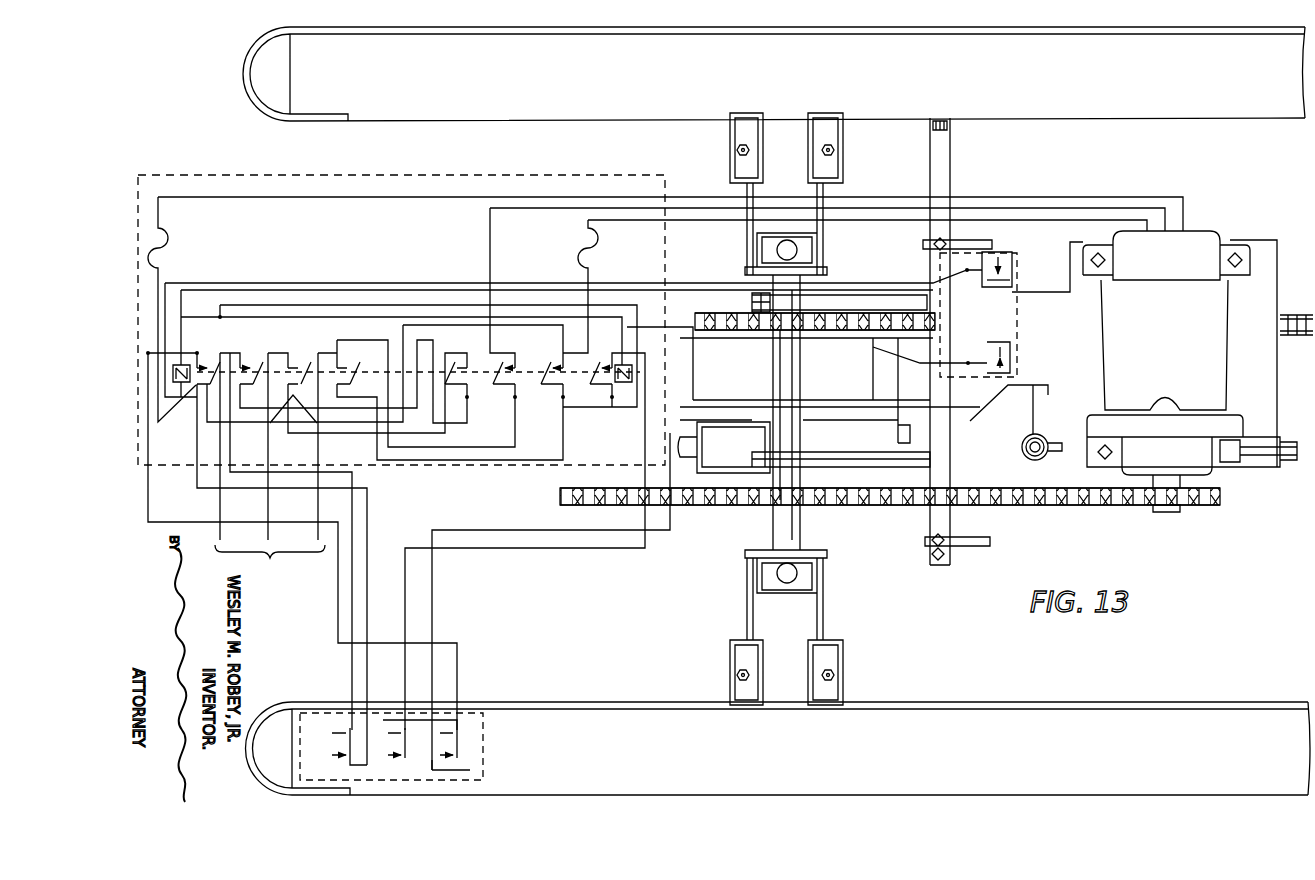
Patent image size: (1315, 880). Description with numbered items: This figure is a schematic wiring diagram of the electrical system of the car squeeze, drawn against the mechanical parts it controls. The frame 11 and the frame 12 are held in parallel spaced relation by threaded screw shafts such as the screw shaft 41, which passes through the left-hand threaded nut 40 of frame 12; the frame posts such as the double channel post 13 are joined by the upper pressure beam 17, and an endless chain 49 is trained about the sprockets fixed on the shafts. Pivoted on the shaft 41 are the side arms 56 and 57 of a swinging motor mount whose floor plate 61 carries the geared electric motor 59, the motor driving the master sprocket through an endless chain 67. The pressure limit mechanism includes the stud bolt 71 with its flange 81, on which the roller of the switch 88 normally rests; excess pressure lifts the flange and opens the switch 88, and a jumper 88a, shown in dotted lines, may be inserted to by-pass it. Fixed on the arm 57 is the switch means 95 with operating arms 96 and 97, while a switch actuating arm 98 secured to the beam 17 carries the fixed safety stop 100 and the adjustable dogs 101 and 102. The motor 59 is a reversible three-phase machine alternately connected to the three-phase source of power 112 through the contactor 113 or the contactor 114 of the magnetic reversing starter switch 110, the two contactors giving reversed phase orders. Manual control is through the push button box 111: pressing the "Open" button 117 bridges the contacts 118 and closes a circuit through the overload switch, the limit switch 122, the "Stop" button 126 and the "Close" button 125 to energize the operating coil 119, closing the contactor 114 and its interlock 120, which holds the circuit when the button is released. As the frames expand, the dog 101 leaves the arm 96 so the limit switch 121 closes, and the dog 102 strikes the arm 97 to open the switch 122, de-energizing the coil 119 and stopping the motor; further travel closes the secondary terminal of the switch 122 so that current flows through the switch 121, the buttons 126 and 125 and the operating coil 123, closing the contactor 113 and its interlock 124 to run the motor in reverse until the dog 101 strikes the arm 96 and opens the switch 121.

The frame 11 is at (1130, 735).
The frame 12 is at (446, 98).
The double channel post 13 is at (739, 131).
The upper channel iron pressure beam 17 is at (1175, 86).
The nut 40 is at (757, 250).
The screw shaft 41 is at (779, 521).
The endless chain 49 is at (862, 331).
The side arm 56 is at (843, 464).
The side arm 57 is at (752, 302).
The geared electric motor 59 is at (1178, 335).
The floor plate 61 is at (1265, 385).
The endless chain 67 is at (1128, 504).
The stud bolt 71 is at (1050, 452).
The flange 81 is at (1040, 462).
The switch 88 is at (1042, 398).
The jumper 88a is at (830, 390).
The switch means 95 is at (1020, 346).
The operating arm 96 is at (1000, 262).
The operating arm 97 is at (1006, 416).
The switch actuating arm 98 is at (950, 148).
The fixed safety stop 100 is at (934, 556).
The adjustable switch actuating dog 101 is at (966, 244).
The adjustable switch actuating dog 102 is at (992, 543).
The magnetic reversing starter switch 110 is at (563, 172).
The push button box 111 is at (487, 716).
The three-phase source of power 112 is at (270, 558).
The contactor 113 is at (250, 362).
The contactor 114 is at (503, 386).
The "Open" button 117 is at (458, 745).
The contacts 118 is at (430, 733).
The operating coil 119 is at (624, 386).
The electrical interlock 120 is at (603, 386).
The limit switch 121 is at (1005, 283).
The double-pole limit switch 122 is at (1012, 364).
The operating coil 123 is at (171, 408).
The interlock 124 is at (212, 354).
The "Close" button 125 is at (386, 762).
The "Stop" button 126 is at (332, 746).